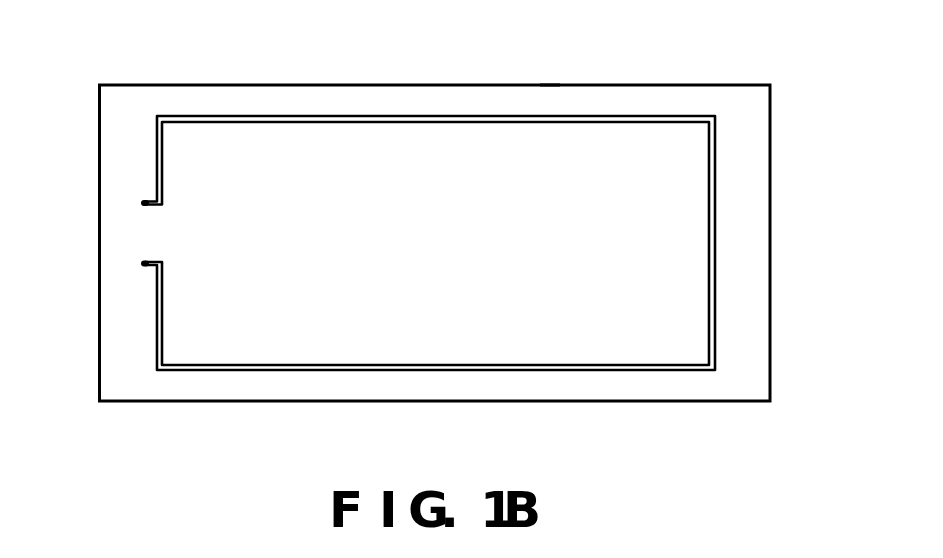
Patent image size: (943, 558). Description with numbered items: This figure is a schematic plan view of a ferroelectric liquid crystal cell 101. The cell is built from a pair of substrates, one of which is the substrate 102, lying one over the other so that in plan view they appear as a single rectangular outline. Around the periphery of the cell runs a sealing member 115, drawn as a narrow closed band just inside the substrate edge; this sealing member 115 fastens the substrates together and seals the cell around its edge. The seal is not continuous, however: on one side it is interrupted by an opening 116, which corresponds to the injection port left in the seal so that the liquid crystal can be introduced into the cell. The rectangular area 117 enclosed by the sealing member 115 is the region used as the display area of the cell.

The ferroelectric liquid crystal cell 101 is at (552, 80).
The substrate 102 is at (770, 99).
The sealing member 115 is at (712, 185).
The gap of loop conductor 116 is at (152, 229).
The area inside the sealing member 117 is at (680, 270).